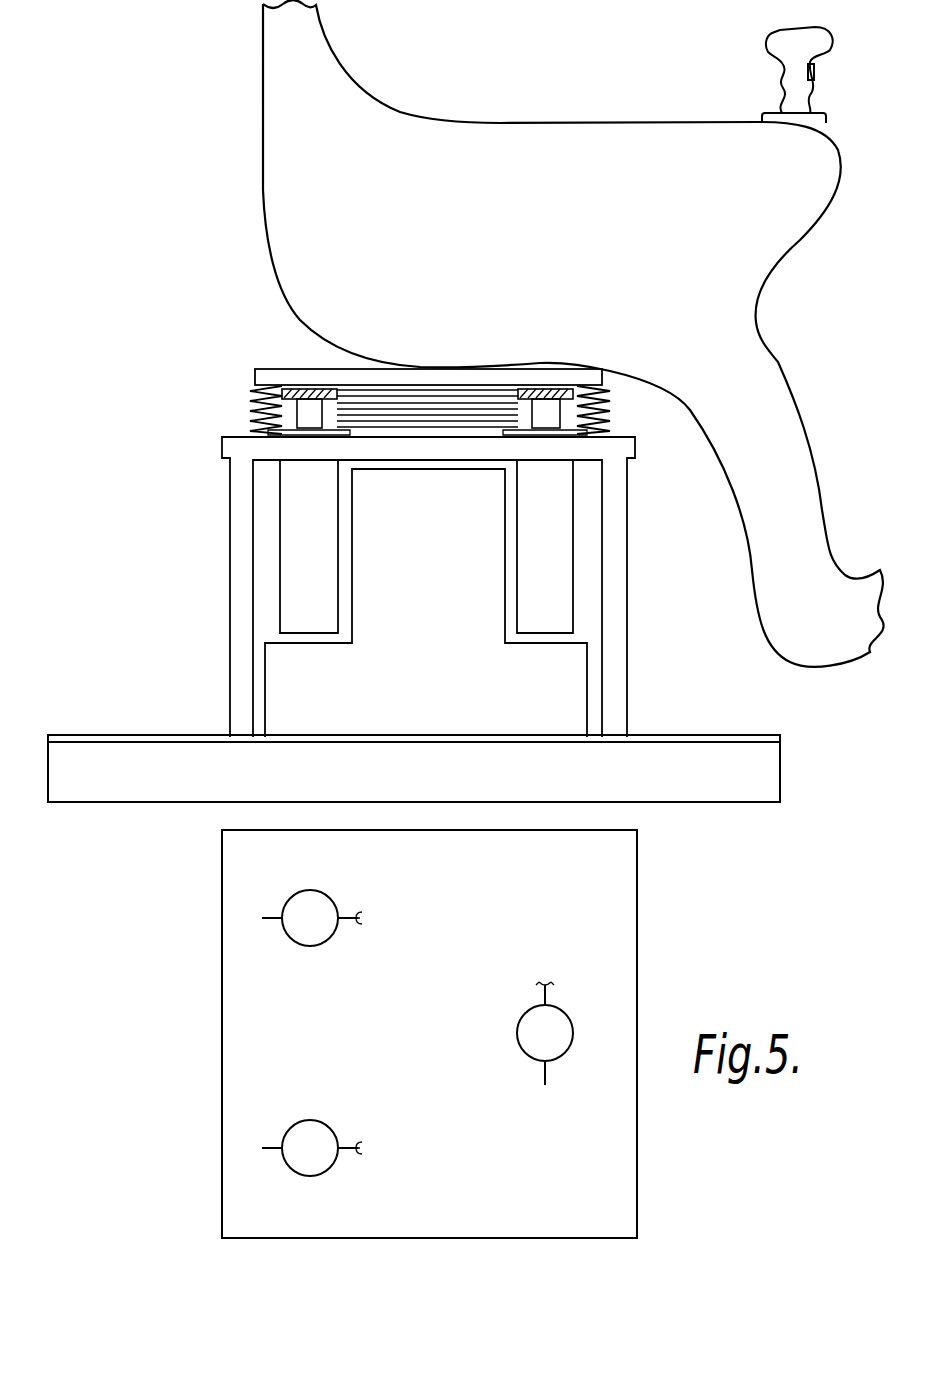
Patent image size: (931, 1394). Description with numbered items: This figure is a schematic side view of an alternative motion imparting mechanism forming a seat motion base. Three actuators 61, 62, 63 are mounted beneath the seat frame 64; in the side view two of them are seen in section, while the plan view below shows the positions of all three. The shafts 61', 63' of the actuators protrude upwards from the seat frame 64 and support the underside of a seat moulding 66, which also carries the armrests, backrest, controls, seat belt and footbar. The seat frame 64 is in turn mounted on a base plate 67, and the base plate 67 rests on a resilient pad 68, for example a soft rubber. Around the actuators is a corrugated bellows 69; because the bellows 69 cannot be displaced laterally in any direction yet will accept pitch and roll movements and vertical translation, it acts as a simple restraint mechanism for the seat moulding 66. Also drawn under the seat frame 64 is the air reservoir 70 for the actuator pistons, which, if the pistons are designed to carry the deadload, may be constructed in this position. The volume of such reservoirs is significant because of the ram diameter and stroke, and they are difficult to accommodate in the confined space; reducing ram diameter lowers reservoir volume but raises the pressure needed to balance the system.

The seat moulding 66 is at (298, 190).
The corrugated bellows 69 is at (603, 412).
The shaft 63' is at (262, 404).
The shaft 61' is at (606, 421).
The seat frame 64 is at (240, 491).
The actuator 63 is at (273, 818).
The air reservoir 70 is at (385, 572).
The actuator 61 is at (576, 772).
The base plate 67 is at (697, 735).
The resilient pad 68 is at (742, 779).
The actuator 62 is at (312, 925).